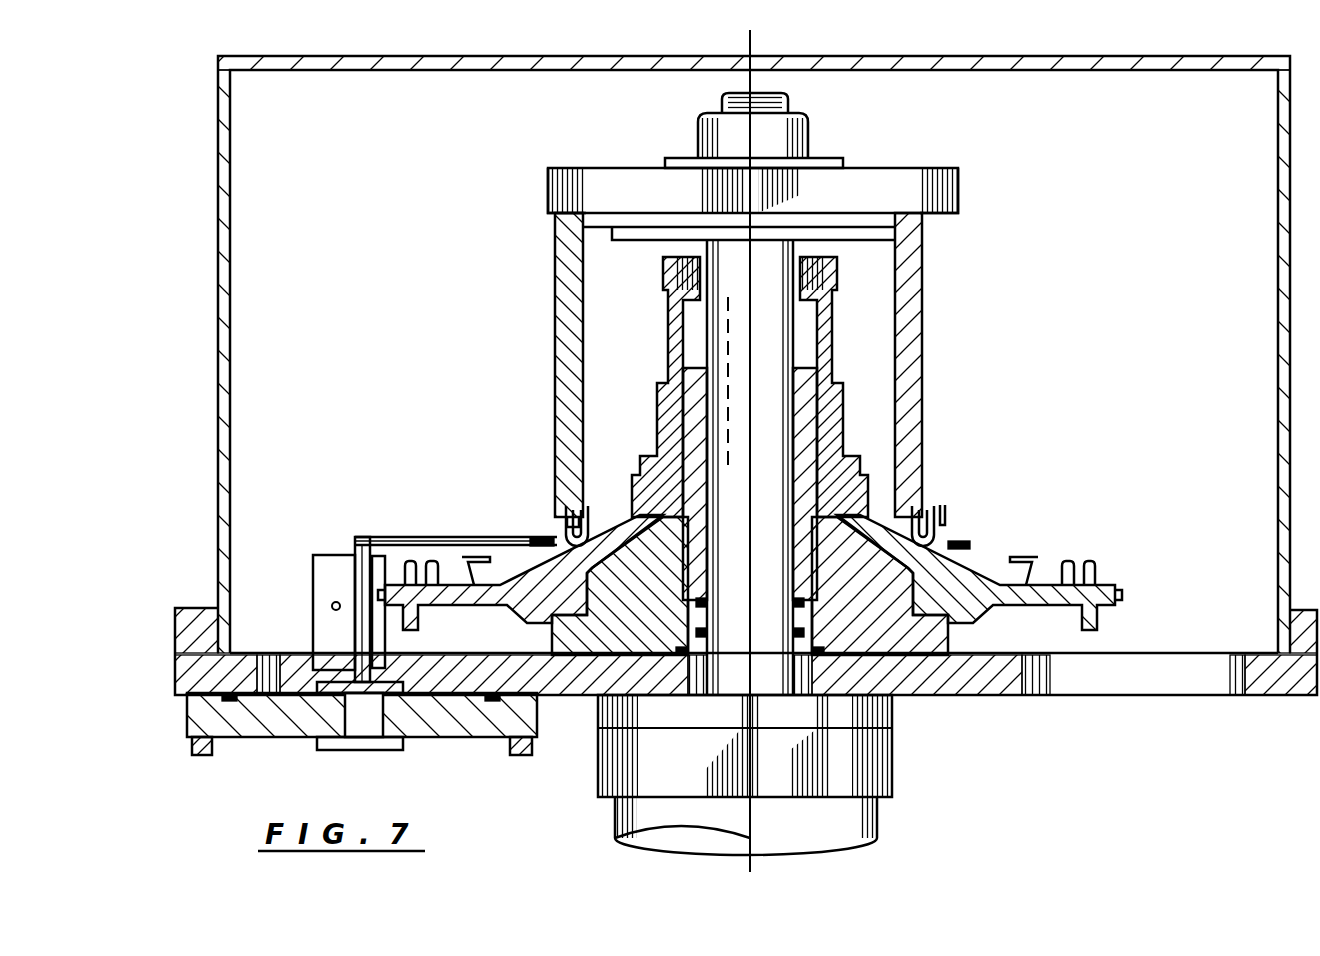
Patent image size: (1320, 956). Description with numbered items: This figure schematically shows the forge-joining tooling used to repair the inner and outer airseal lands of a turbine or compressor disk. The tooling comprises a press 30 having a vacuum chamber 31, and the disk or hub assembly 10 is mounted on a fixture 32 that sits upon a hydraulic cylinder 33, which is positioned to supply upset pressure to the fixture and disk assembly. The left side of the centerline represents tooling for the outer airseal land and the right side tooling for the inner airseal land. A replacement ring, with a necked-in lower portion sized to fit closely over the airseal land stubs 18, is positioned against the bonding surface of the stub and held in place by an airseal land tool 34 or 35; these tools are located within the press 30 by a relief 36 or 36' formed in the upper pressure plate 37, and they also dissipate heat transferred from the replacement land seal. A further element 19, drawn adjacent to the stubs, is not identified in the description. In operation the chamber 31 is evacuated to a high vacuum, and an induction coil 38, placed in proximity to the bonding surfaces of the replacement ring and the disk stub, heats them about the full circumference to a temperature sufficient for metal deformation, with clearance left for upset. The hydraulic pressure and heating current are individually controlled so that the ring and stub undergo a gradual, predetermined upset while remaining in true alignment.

The press 30 is at (172, 161).
The vacuum chamber 31 is at (318, 187).
The fixture 32 is at (668, 608).
The hydraulic cylinder 33 is at (808, 833).
The airseal land tool 34 is at (555, 305).
The airseal land tool 35 is at (938, 388).
The relief 36 is at (528, 190).
The relief 36' is at (971, 197).
The upper pressure plate 37 is at (802, 205).
The disk or hub assembly 10 is at (870, 322).
The airseal land stubs 18 is at (560, 555).
The seal ring 19 is at (565, 528).
The induction coil 38 is at (548, 538).